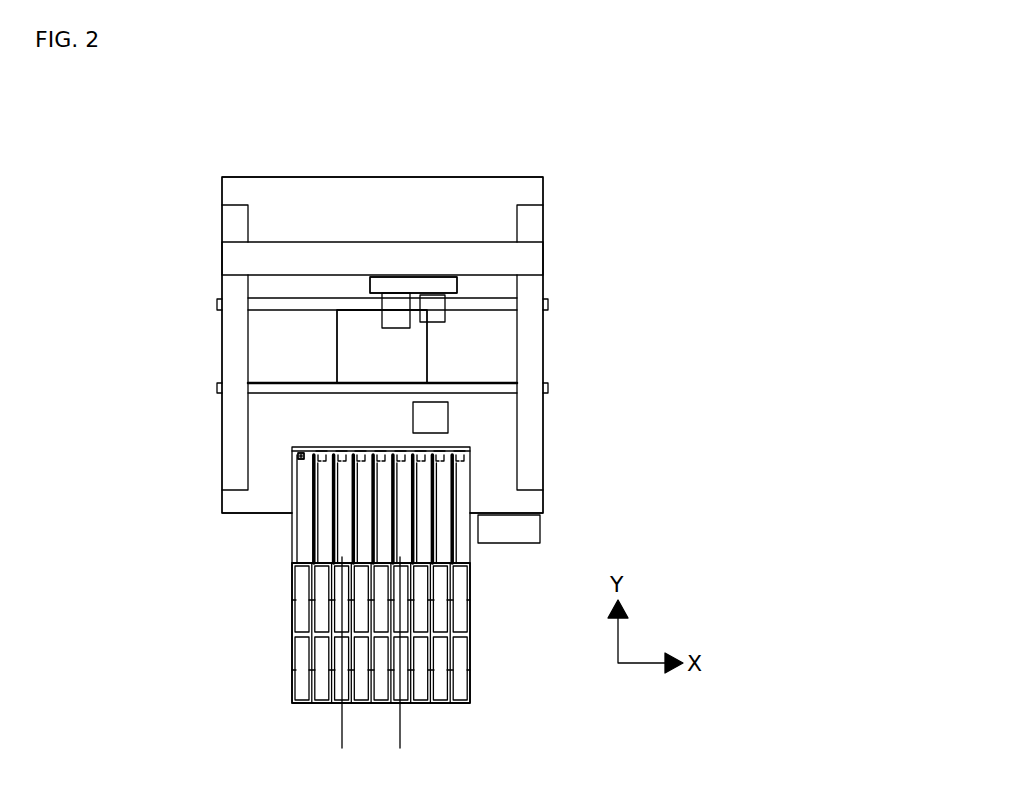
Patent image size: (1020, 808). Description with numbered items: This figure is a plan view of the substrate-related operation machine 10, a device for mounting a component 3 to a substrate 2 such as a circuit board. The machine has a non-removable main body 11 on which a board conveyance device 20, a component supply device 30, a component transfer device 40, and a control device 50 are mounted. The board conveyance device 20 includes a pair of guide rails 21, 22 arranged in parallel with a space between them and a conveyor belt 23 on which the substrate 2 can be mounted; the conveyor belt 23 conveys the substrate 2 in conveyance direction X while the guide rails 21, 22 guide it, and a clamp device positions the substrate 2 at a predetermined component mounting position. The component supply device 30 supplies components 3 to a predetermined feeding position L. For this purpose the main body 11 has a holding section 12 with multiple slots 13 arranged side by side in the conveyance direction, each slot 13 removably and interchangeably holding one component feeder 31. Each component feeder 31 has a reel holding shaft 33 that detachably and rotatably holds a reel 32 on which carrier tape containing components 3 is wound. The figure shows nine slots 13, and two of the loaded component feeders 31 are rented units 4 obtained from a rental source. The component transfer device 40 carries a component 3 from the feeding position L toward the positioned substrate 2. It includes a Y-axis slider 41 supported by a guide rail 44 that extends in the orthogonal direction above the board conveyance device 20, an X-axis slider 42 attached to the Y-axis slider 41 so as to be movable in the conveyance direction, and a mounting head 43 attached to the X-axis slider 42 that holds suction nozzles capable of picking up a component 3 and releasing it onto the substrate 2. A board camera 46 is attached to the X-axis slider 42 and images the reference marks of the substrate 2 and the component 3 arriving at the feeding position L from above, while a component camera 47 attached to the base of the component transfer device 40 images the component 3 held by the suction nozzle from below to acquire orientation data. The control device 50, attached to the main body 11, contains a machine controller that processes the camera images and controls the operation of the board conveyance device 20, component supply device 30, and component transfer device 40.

The substrate 2 is at (350, 343).
The component 3 is at (295, 452).
The rented unit 4 is at (365, 669).
The substrate-related operation machine 10 is at (497, 158).
The main body 11 is at (545, 262).
The holding section 12 is at (472, 588).
The slot 13 is at (292, 547).
The board conveyance device 20 is at (468, 358).
The guide rail 21 is at (268, 308).
The guide rail 22 is at (267, 388).
The conveyor belt 23 is at (262, 348).
The component supply device 30 is at (283, 527).
The component feeder 31 is at (302, 500).
The reel 32 is at (463, 622).
The reel holding shaft 33 is at (293, 602).
The component transfer device 40 is at (395, 230).
The Y-axis slider 41 is at (245, 260).
The X-axis slider 42 is at (410, 285).
The mounting head 43 is at (382, 303).
The guide rail 44 is at (230, 410).
The board camera 46 is at (437, 315).
The component camera 47 is at (442, 420).
The control device 50 is at (541, 532).
The feeding position L is at (297, 453).